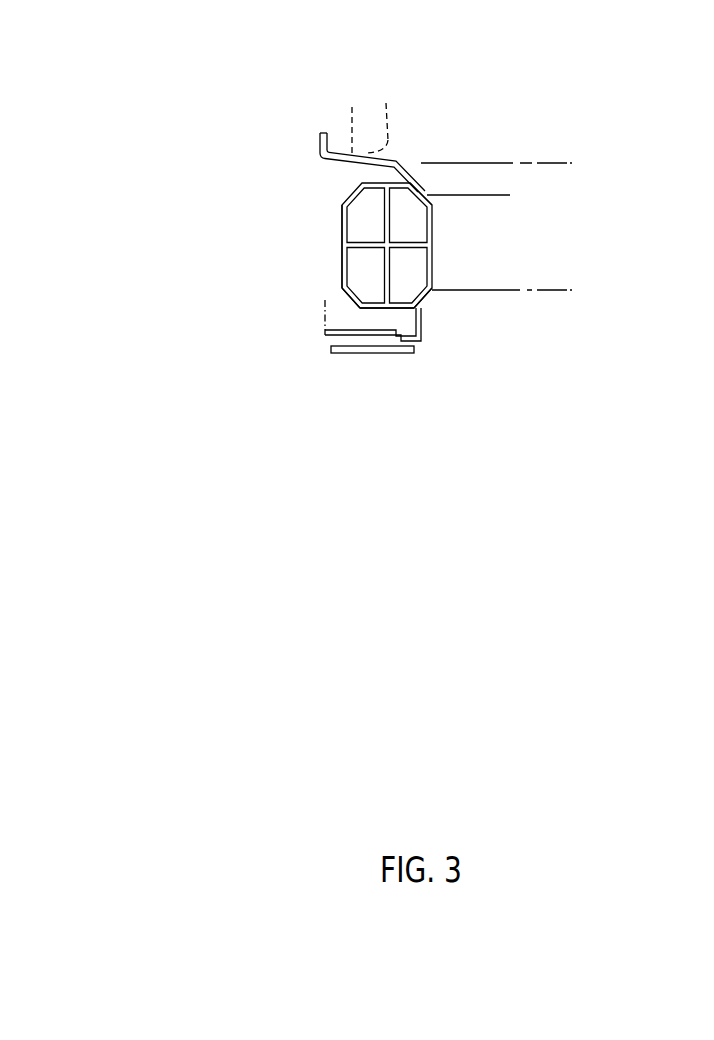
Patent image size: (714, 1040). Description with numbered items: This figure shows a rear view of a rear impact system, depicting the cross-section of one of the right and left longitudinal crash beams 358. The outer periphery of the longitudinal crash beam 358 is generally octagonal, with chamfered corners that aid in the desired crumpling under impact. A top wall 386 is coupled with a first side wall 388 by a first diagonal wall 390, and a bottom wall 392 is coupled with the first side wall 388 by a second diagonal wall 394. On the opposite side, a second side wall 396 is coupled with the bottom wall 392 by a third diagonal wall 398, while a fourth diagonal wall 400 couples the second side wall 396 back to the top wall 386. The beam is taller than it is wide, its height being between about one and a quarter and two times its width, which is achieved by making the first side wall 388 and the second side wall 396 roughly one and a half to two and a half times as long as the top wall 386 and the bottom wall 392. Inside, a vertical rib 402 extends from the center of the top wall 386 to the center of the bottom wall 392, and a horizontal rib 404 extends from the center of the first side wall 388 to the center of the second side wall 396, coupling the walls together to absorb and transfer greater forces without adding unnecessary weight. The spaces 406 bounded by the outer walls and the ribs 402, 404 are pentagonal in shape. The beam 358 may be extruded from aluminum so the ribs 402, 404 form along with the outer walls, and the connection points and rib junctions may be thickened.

The longitudinal crash beam 358 is at (165, 105).
The top wall 386 is at (389, 183).
The first side wall 388 is at (433, 270).
The first diagonal wall 390 is at (424, 190).
The bottom wall 392 is at (374, 306).
The second diagonal wall 394 is at (417, 308).
The second side wall 396 is at (342, 270).
The third diagonal wall 398 is at (352, 298).
The fourth diagonal wall 400 is at (347, 200).
The vertical rib 402 is at (390, 213).
The horizontal rib 404 is at (343, 242).
The spaces 406 is at (362, 277).